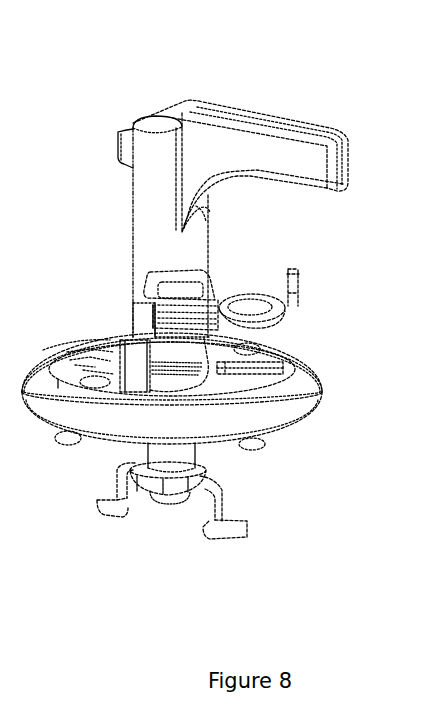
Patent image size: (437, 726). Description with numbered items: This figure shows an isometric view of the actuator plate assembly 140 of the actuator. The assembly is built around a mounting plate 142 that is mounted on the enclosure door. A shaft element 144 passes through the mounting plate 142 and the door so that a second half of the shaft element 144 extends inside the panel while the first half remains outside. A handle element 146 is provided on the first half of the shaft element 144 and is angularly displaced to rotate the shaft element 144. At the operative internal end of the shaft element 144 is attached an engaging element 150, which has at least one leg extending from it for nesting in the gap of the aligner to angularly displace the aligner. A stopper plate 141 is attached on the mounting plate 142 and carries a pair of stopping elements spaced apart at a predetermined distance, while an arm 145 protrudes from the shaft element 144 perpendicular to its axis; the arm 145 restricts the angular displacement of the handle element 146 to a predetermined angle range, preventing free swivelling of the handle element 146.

The actuator plate assembly 140 is at (128, 126).
The stopper plate 141 is at (282, 300).
The mounting plate 142 is at (103, 422).
The shaft element 144 is at (188, 452).
The arm 145 is at (155, 292).
The handle element 146 is at (282, 137).
The engaging element 150 is at (142, 504).